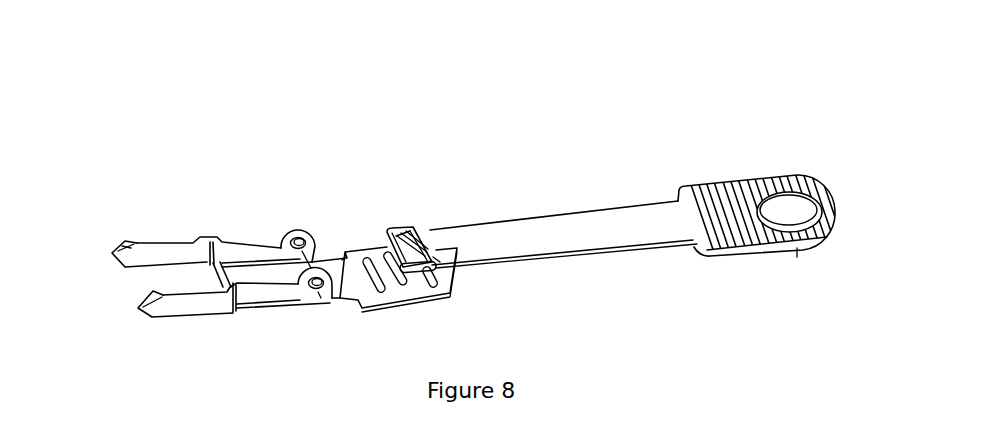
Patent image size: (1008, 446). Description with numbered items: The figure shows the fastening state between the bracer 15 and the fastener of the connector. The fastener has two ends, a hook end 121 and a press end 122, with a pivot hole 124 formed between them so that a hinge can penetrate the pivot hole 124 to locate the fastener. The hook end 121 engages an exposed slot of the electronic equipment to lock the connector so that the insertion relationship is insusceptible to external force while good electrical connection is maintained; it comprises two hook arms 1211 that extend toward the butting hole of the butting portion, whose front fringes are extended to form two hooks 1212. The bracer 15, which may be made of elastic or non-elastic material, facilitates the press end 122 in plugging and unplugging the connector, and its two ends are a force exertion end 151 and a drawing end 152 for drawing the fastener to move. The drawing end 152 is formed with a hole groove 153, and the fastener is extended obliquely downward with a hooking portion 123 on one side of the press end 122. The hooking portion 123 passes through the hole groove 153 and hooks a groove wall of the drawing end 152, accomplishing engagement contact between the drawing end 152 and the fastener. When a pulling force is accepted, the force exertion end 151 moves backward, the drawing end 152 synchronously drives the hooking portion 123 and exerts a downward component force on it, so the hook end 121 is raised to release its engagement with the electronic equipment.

The bracer 15 is at (538, 225).
The force exertion end 151 is at (738, 193).
The drawing end 152 is at (392, 232).
The hole groove 153 is at (433, 257).
The hook end 121 is at (180, 188).
The hook arms 1211 is at (188, 253).
The hooks 1212 is at (118, 257).
The press end 122 is at (413, 302).
The hooking portion 123 is at (430, 237).
The pivot hole 124 is at (308, 232).